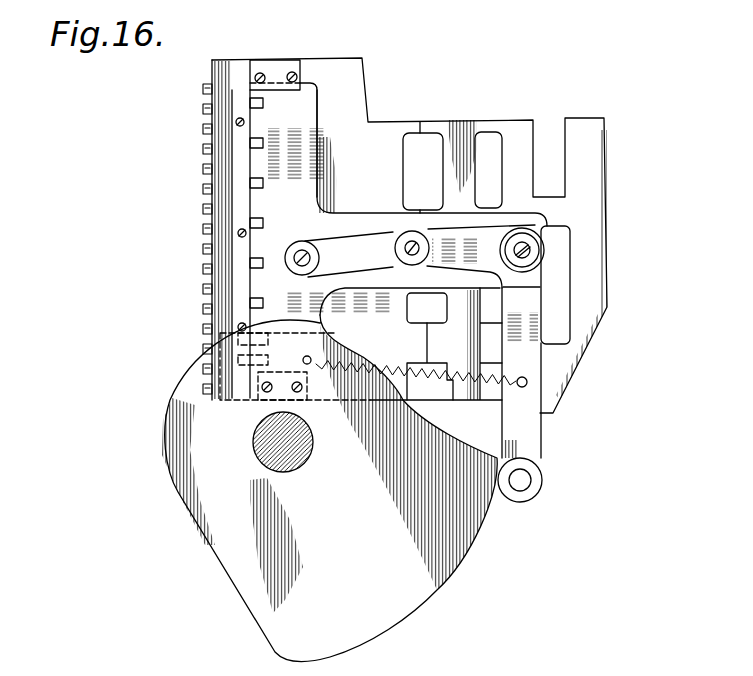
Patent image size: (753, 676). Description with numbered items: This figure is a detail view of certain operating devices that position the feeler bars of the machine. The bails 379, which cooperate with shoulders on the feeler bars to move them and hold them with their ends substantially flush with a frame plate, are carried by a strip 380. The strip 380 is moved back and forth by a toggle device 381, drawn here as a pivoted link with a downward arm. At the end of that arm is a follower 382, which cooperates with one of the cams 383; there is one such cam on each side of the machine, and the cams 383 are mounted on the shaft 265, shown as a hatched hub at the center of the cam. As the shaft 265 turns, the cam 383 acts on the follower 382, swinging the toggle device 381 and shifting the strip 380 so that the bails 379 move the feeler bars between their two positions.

The shaft 265 is at (257, 452).
The bails 379 is at (263, 246).
The strip 380 is at (307, 137).
The toggle device 381 is at (437, 237).
The follower 382 is at (543, 478).
The cams 383 is at (462, 556).